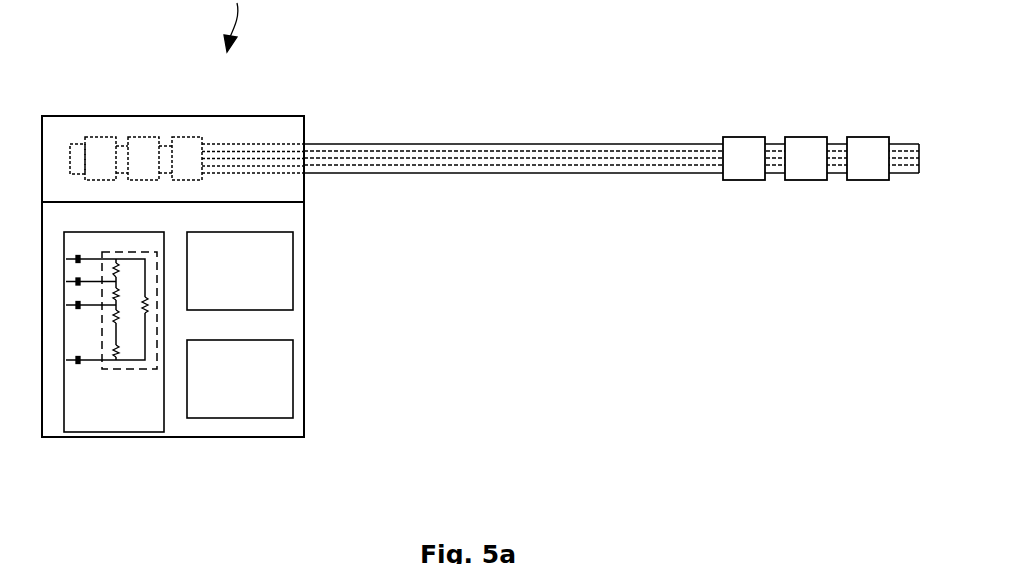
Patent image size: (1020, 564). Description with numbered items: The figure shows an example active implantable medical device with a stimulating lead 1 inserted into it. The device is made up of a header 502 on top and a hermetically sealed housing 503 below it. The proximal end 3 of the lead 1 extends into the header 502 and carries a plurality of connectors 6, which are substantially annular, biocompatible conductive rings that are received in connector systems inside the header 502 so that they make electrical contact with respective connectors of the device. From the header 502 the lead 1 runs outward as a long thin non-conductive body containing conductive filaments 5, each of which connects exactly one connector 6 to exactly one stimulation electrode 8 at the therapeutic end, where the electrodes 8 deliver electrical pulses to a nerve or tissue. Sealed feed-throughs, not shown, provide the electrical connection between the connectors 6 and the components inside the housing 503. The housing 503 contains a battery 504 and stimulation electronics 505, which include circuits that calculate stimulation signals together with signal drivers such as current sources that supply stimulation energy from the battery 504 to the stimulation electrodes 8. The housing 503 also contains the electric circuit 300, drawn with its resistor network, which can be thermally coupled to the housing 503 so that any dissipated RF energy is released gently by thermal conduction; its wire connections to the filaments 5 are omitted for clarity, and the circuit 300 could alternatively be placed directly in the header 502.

The stimulating lead 1 is at (537, 97).
The proximal end 3 is at (290, 124).
The conductive filaments 5 is at (415, 150).
The connectors 6 is at (196, 153).
The stimulation electrodes 8 is at (743, 143).
The electric circuit 300 is at (112, 395).
The header 502 is at (92, 116).
The hermetically sealed housing 503 is at (188, 438).
The battery 504 is at (268, 395).
The stimulation electronics 505 is at (280, 282).